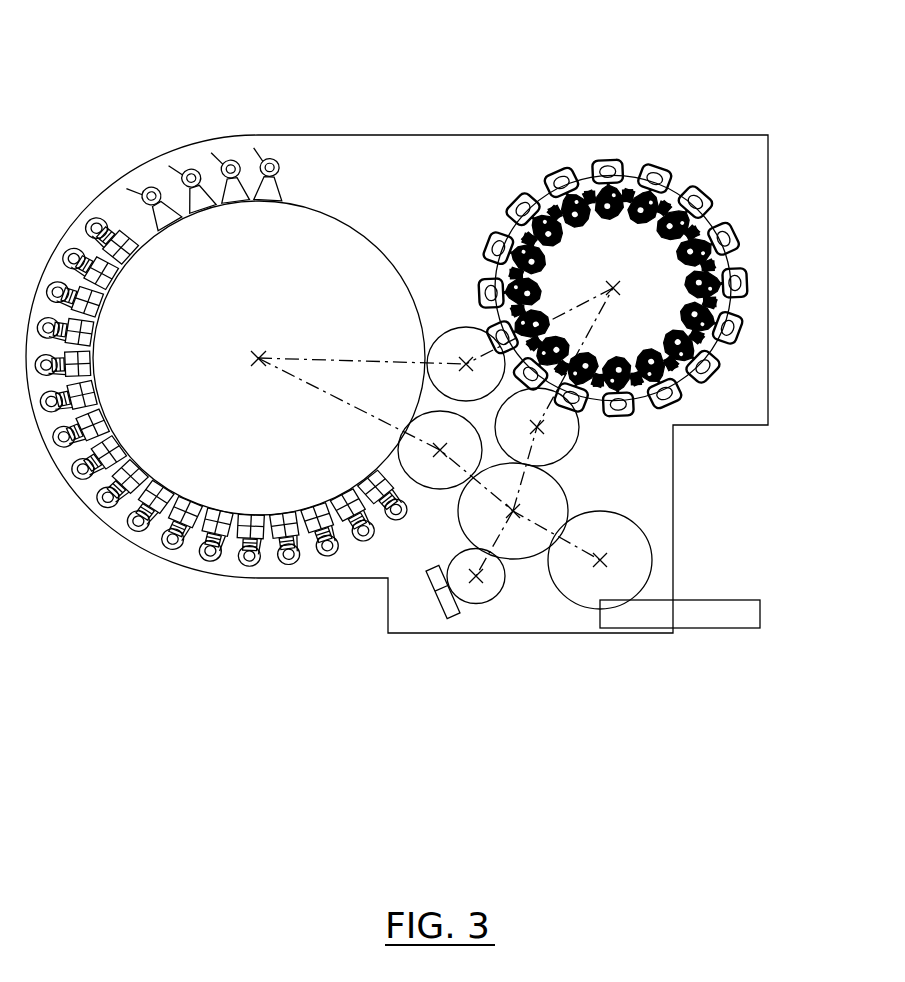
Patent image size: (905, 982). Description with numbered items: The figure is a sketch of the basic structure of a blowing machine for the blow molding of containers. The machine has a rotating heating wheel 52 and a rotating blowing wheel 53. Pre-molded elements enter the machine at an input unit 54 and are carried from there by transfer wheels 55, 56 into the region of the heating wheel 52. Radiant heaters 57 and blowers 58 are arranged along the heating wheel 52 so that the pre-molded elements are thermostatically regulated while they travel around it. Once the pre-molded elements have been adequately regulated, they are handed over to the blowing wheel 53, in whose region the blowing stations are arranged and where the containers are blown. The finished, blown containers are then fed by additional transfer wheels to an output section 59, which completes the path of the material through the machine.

The heating wheel 52 is at (320, 232).
The blowing wheel 53 is at (678, 195).
The input unit 54 is at (443, 607).
The transfer wheel 55 is at (518, 549).
The transfer wheel 56 is at (433, 484).
The radiant heaters 57 is at (195, 549).
The blowers 58 is at (167, 553).
The output section 59 is at (728, 606).